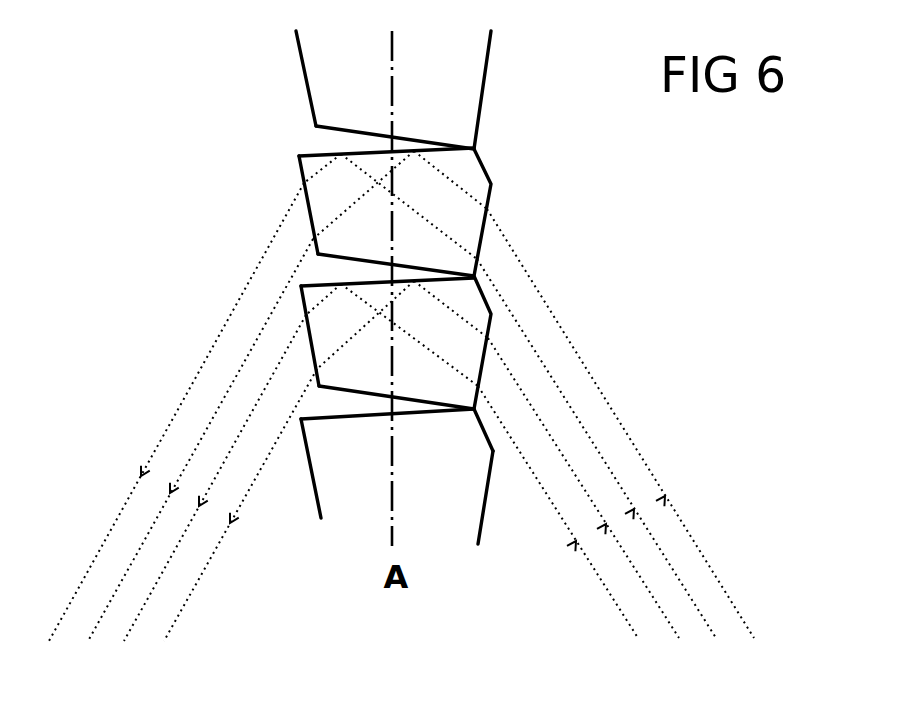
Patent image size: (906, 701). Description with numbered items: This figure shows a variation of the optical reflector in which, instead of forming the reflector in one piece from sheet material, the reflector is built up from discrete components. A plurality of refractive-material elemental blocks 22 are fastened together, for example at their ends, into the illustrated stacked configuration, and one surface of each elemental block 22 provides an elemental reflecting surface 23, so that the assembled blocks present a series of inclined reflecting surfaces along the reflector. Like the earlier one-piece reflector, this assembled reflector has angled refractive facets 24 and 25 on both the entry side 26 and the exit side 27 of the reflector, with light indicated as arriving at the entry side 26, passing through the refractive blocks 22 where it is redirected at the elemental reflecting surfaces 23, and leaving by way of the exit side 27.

The refractive-material elemental block 22 is at (462, 98).
The elemental reflecting surface 23 is at (350, 155).
The angled refractive facet 24 is at (488, 492).
The angled refractive facet 25 is at (318, 507).
The entry side 26 is at (676, 288).
The exit side 27 is at (165, 296).